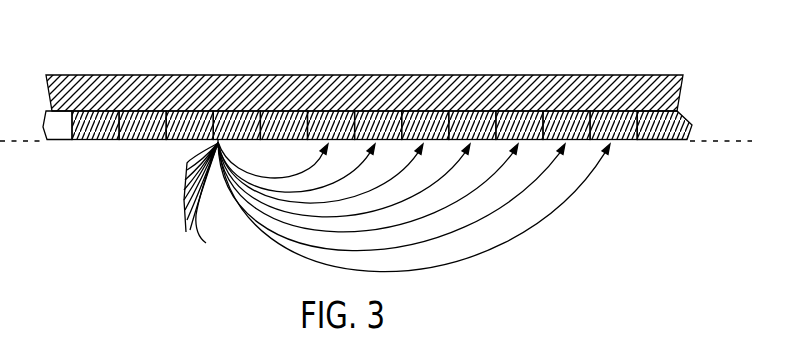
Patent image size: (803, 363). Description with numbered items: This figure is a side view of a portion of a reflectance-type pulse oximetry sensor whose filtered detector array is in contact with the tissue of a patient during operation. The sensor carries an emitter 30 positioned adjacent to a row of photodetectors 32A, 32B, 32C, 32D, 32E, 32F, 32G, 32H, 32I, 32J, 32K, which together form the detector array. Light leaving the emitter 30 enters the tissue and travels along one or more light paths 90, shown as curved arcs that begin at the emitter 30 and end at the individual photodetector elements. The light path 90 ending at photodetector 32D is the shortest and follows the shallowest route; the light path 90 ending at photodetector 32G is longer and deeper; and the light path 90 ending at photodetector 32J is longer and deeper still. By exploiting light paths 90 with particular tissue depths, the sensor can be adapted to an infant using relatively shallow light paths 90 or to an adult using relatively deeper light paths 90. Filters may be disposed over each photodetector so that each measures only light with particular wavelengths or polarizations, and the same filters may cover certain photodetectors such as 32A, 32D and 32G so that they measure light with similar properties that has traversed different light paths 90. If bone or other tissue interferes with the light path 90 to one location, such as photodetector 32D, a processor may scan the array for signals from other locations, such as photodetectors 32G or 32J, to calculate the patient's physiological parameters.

The emitter 30 is at (217, 110).
The photodetector 32A is at (100, 121).
The photodetector 32B is at (152, 118).
The photodetector 32C is at (286, 118).
The photodetector 32D is at (337, 118).
The photodetector 32E is at (386, 118).
The photodetector 32F is at (434, 118).
The photodetector 32G is at (474, 112).
The photodetector 32H is at (525, 110).
The photodetector 32I is at (563, 110).
The photodetector 32J is at (617, 112).
The photodetector 32K is at (666, 116).
The light path 90 is at (186, 232).